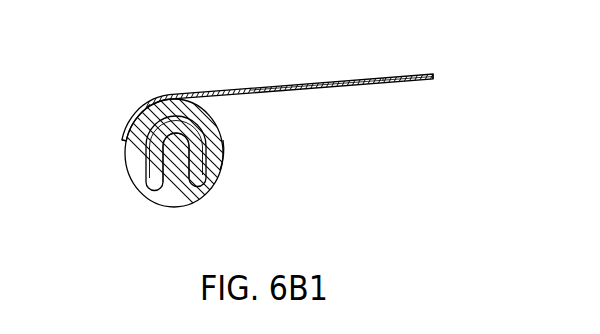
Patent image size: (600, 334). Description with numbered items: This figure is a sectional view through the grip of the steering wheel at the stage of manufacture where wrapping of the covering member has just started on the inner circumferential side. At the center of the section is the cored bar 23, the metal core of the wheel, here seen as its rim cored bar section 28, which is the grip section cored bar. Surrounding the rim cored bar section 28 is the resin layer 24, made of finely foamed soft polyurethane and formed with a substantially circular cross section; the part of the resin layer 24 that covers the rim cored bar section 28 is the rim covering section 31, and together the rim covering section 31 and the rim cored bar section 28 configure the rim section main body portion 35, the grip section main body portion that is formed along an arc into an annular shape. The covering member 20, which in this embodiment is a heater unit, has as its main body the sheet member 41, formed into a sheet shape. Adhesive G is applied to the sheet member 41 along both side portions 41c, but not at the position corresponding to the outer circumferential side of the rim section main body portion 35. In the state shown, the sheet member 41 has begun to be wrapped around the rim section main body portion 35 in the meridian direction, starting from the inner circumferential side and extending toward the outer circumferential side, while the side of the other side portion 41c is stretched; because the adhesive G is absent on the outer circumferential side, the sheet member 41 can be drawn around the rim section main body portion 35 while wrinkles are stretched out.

The covering member 20 is at (212, 95).
The sheet member 41 is at (306, 88).
The side portion 41c is at (125, 148).
The adhesive G is at (147, 107).
The rim covering section 31 is at (218, 126).
The rim section main body portion 35 is at (236, 152).
The rim cored bar section 28 is at (128, 176).
The cored bar 23 is at (143, 200).
The resin layer 24 is at (213, 191).